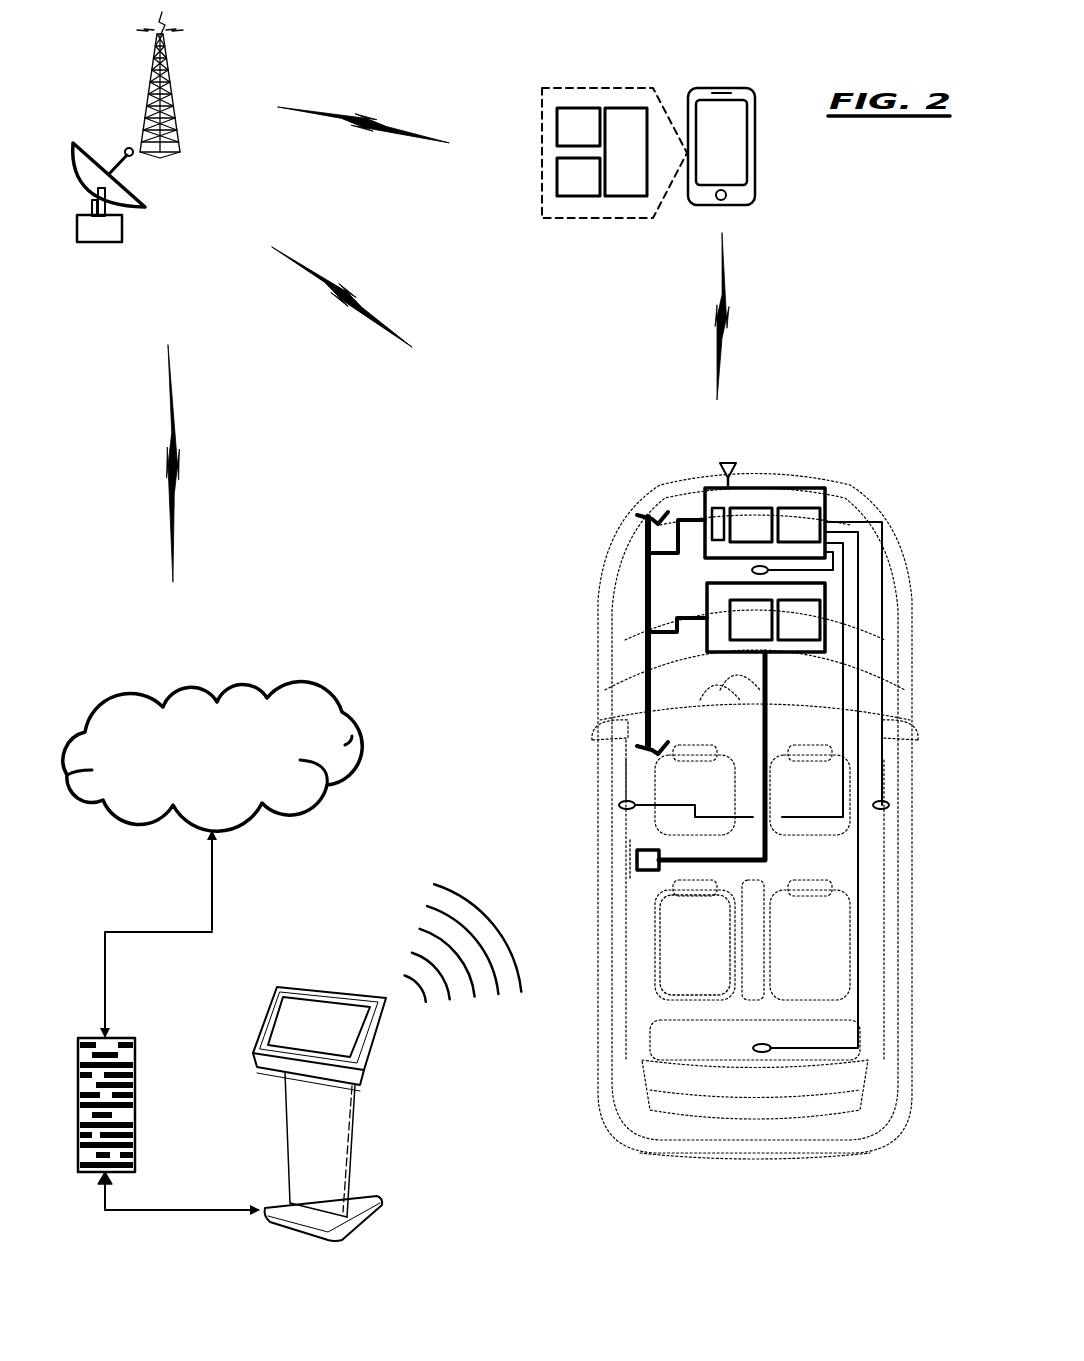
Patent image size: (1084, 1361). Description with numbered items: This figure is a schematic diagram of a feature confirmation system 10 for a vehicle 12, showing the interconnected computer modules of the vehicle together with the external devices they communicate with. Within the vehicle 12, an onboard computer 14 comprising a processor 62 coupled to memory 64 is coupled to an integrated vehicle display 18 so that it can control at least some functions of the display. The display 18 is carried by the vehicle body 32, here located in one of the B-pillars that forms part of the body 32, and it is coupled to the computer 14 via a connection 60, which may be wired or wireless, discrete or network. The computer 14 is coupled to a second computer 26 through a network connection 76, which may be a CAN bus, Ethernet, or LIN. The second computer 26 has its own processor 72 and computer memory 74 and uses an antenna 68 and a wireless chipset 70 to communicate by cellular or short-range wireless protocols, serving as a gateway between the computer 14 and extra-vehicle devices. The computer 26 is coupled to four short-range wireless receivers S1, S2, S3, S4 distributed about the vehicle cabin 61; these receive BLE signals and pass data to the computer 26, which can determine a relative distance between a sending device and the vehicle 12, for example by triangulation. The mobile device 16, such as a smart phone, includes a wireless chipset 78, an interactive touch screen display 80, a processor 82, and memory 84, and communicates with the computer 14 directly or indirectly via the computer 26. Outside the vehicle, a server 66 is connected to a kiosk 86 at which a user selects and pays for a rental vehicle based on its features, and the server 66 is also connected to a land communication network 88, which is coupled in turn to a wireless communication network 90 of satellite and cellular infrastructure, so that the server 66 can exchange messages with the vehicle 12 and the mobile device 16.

The feature confirmation system 10 is at (882, 268).
The vehicle 12 is at (668, 488).
The onboard computer 14 is at (792, 656).
The mobile device 16 is at (756, 118).
The integrated vehicle display 18 is at (635, 864).
The second computer 26 is at (834, 506).
The vehicle body 32 is at (622, 774).
The connection 60 is at (686, 866).
The vehicle cabin 61 is at (690, 950).
The processor 62 is at (762, 632).
The memory 64 is at (810, 632).
The server 66 is at (137, 1102).
The antenna 68 is at (736, 463).
The wireless chipset 70 is at (725, 508).
The processor 72 is at (762, 537).
The computer memory 74 is at (810, 537).
The network connection 76 is at (643, 613).
The wireless chipset 78 is at (638, 163).
The interactive touch screen display 80 is at (708, 119).
The processor 82 is at (590, 138).
The memory 84 is at (590, 188).
The kiosk 86 is at (364, 1130).
The land communication network 88 is at (218, 769).
The wireless communication network 90 is at (58, 72).
The short-range wireless receiver S1 is at (619, 805).
The short-range wireless receiver S2 is at (754, 1048).
The short-range wireless receiver S3 is at (890, 805).
The short-range wireless receiver S4 is at (752, 571).